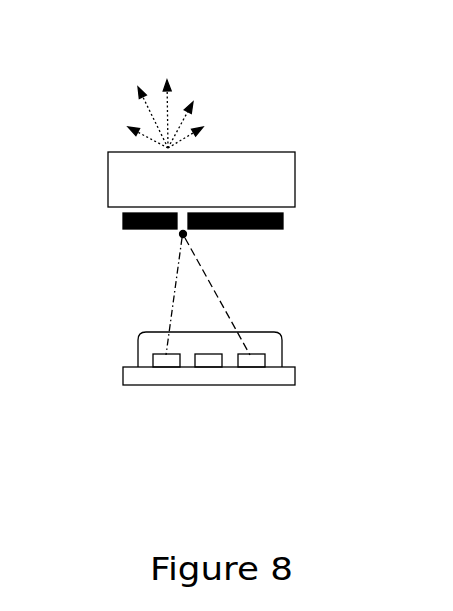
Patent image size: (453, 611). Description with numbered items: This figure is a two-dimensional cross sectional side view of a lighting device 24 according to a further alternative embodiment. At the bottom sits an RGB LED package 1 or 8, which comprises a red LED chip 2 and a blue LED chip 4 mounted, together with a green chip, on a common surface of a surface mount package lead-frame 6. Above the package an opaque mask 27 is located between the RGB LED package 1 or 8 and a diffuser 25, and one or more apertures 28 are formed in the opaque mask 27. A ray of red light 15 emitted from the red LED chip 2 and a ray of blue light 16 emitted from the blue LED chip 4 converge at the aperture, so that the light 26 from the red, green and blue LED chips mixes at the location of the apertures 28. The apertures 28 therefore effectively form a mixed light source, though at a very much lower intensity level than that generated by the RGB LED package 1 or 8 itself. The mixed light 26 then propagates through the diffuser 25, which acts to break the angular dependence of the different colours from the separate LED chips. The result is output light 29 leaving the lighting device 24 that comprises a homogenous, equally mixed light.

The lighting device 24 is at (362, 94).
The output light 29 is at (168, 107).
The diffuser 25 is at (253, 148).
The apertures 28 is at (123, 221).
The opaque mask 27 is at (285, 218).
The light 26 is at (181, 235).
The ray of red light 15 is at (170, 280).
The ray of blue light 16 is at (213, 285).
The RGB LED package 1 is at (274, 349).
The RGB LED package 8 is at (282, 347).
The red LED chip 2 is at (170, 362).
The blue LED chip 4 is at (252, 362).
The package lead-frame 6 is at (280, 375).